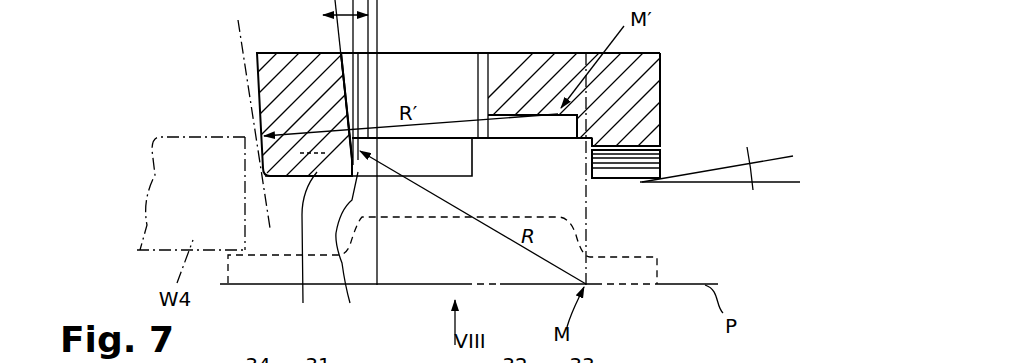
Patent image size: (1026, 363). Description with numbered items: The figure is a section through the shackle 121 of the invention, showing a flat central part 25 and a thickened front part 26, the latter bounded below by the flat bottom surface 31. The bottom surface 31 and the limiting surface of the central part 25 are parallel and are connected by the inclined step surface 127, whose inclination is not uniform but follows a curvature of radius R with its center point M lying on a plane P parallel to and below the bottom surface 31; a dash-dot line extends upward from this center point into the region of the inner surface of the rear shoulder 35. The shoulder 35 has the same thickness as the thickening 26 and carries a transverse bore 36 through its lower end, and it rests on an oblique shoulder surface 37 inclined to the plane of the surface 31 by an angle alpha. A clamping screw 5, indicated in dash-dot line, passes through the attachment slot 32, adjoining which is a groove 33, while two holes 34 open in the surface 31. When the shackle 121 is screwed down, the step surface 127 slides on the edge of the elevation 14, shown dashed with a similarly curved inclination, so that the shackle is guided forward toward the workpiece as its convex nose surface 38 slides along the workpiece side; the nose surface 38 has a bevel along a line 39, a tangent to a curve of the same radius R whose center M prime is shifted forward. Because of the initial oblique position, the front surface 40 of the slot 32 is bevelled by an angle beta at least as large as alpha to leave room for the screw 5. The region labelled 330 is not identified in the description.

The clamping screw 5 is at (381, 258).
The elevation 14 is at (570, 228).
The flat central part 25 is at (358, 50).
The thickened front part 26 is at (245, 98).
The bottom surface 31 is at (303, 251).
The attachment slot 32 is at (418, 72).
The groove 33 is at (577, 150).
The holes 34 is at (270, 209).
The rear shoulder 35 is at (645, 100).
The transverse bore 36 is at (662, 155).
The oblique shoulder surface 37 is at (657, 184).
The nose surface 38 is at (246, 68).
The line 39 is at (267, 229).
The front surface 40 is at (327, 100).
The shackle 121 is at (684, 106).
The step surface 127 is at (356, 251).
The recess 330 is at (517, 141).